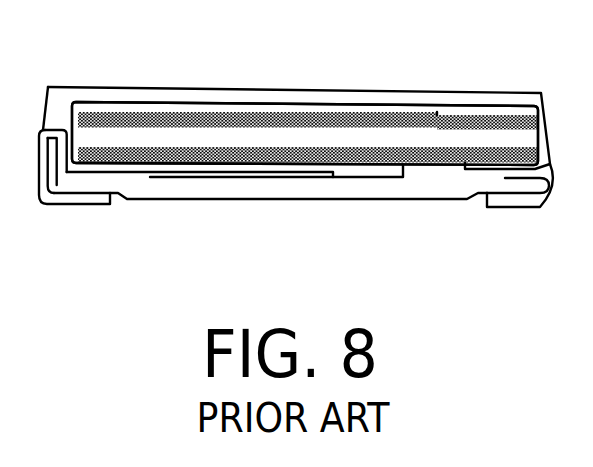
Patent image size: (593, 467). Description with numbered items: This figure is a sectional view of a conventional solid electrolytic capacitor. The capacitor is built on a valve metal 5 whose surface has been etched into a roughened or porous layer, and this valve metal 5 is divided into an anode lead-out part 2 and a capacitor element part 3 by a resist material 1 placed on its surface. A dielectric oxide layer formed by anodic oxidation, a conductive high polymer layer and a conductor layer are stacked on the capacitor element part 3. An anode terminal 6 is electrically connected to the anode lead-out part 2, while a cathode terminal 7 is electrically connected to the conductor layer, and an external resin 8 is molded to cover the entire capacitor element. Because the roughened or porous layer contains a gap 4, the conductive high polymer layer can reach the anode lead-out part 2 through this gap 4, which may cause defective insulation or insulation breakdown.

The resist material 1 is at (422, 111).
The anode lead-out part 2 is at (488, 140).
The capacitor element part 3 is at (163, 135).
The gap 4 is at (406, 163).
The valve metal 5 is at (237, 130).
The anode terminal 6 is at (117, 172).
The cathode terminal 7 is at (517, 169).
The external resin 8 is at (276, 89).